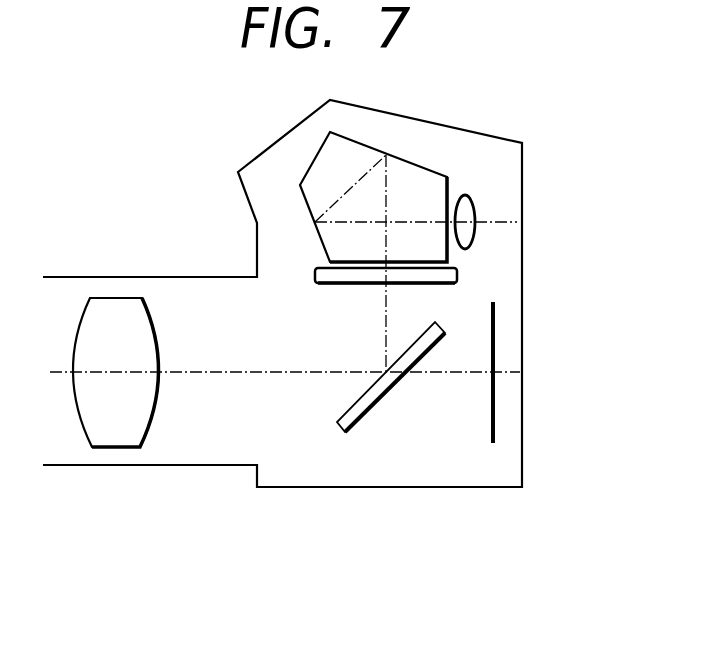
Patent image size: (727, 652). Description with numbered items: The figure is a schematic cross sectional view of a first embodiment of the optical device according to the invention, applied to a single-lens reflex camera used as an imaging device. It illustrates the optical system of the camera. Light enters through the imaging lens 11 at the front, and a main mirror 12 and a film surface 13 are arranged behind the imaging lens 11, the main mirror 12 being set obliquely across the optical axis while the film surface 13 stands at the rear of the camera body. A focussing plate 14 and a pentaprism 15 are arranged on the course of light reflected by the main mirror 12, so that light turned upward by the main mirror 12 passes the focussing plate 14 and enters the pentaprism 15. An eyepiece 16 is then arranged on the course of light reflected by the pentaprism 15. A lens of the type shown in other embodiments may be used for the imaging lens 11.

The imaging lens 11 is at (118, 432).
The main mirror 12 is at (358, 410).
The film surface 13 is at (494, 340).
The focussing plate 14 is at (450, 272).
The pentaprism 15 is at (320, 172).
The eyepiece 16 is at (472, 233).